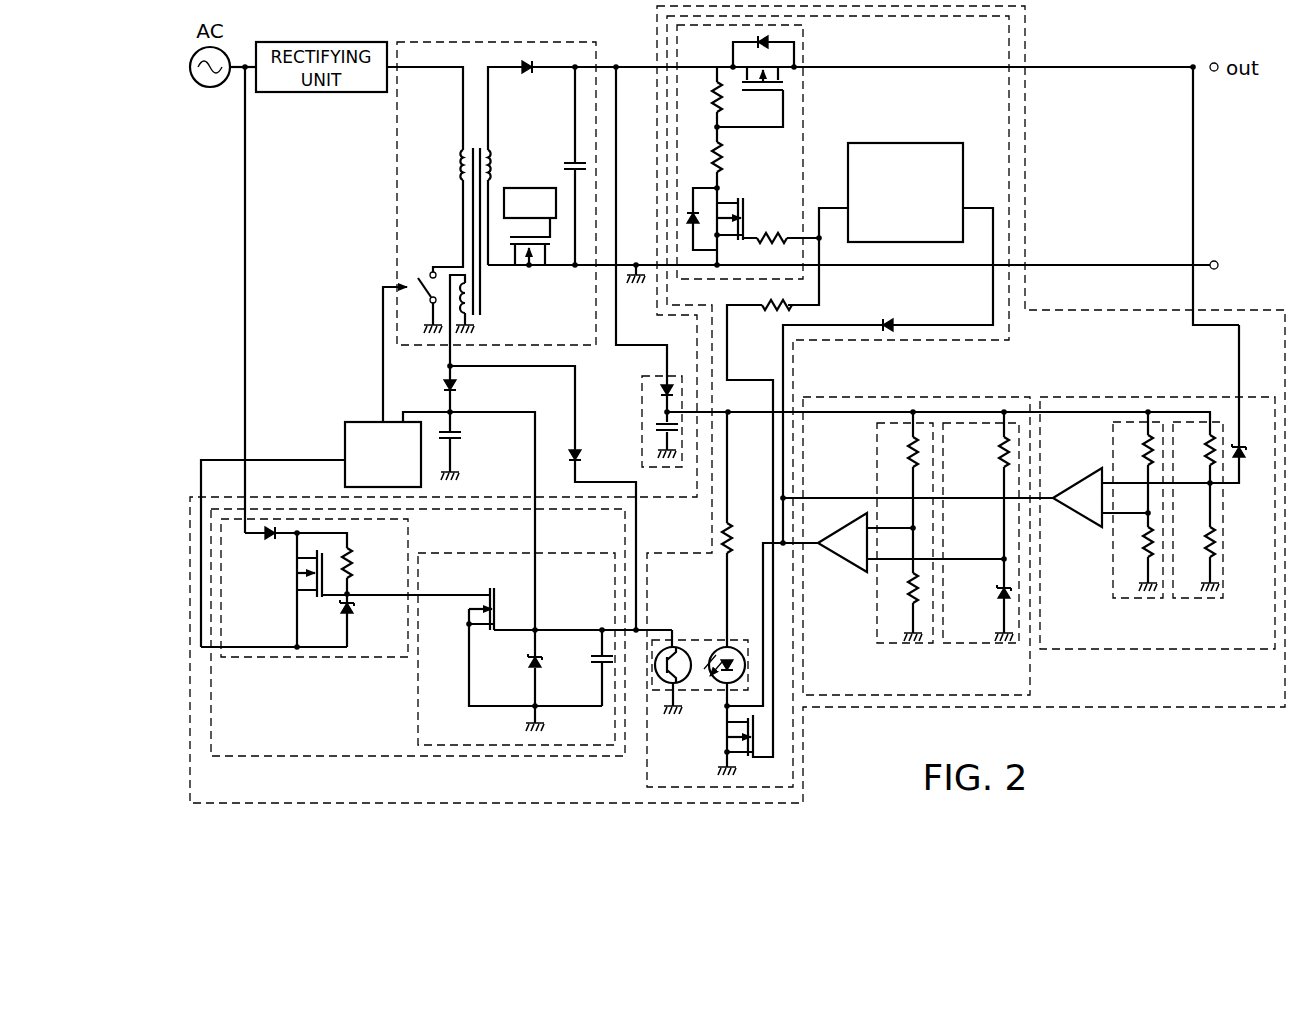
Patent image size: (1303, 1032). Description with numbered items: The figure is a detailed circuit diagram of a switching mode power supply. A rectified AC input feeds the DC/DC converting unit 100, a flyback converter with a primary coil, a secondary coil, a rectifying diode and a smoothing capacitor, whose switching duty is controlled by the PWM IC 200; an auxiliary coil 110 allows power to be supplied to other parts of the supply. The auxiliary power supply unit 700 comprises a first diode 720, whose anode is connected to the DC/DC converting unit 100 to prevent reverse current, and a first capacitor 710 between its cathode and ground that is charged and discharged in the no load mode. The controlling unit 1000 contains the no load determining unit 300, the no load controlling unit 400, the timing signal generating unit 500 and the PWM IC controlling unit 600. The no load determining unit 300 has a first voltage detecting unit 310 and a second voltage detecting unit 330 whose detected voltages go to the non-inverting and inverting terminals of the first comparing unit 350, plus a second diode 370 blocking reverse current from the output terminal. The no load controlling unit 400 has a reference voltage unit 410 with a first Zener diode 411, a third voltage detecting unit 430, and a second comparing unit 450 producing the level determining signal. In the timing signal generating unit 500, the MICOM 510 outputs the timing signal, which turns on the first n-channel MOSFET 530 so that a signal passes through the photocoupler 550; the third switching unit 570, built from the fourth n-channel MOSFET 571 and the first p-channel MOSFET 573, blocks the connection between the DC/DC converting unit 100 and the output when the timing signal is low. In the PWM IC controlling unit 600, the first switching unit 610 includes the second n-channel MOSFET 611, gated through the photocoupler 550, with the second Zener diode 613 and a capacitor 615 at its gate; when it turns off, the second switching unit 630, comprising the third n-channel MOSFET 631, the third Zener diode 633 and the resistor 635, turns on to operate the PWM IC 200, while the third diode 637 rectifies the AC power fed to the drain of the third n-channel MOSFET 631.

The DC/DC converting unit 100 is at (397, 178).
The auxiliary coil 110 is at (480, 320).
The PWM IC 200 is at (368, 420).
The no load determining unit 300 is at (1150, 396).
The first voltage detecting unit 310 is at (1197, 600).
The second voltage detecting unit 330 is at (1137, 600).
The first comparing unit 350 is at (1075, 478).
The second diode 370 is at (1248, 457).
The no load controlling unit 400 is at (917, 396).
The reference voltage unit 410 is at (983, 650).
The first Zener diode 411 is at (990, 590).
The third voltage detecting unit 430 is at (903, 650).
The second comparing unit 450 is at (840, 565).
The timing signal generating unit 500 is at (1010, 325).
The MICOM 510 is at (905, 143).
The first n-channel MOSFET 530 is at (724, 734).
The photocoupler 550 is at (693, 639).
The third switching unit 570 is at (803, 42).
The fourth n-channel MOSFET 571 is at (750, 220).
The first p-channel MOSFET 573 is at (763, 100).
The PWM IC controlling unit 600 is at (418, 760).
The first switching unit 610 is at (418, 705).
The second n-channel MOSFET 611 is at (464, 608).
The second Zener diode 613 is at (521, 660).
The capacitor 615 is at (589, 658).
The second switching unit 630 is at (272, 660).
The third n-channel MOSFET 631 is at (292, 574).
The third Zener diode 633 is at (364, 611).
The resistor 635 is at (363, 570).
The third diode 637 is at (270, 545).
The auxiliary power supply unit 700 is at (657, 375).
The first capacitor 710 is at (655, 430).
The first diode 720 is at (659, 390).
The controlling unit 1000 is at (1025, 178).